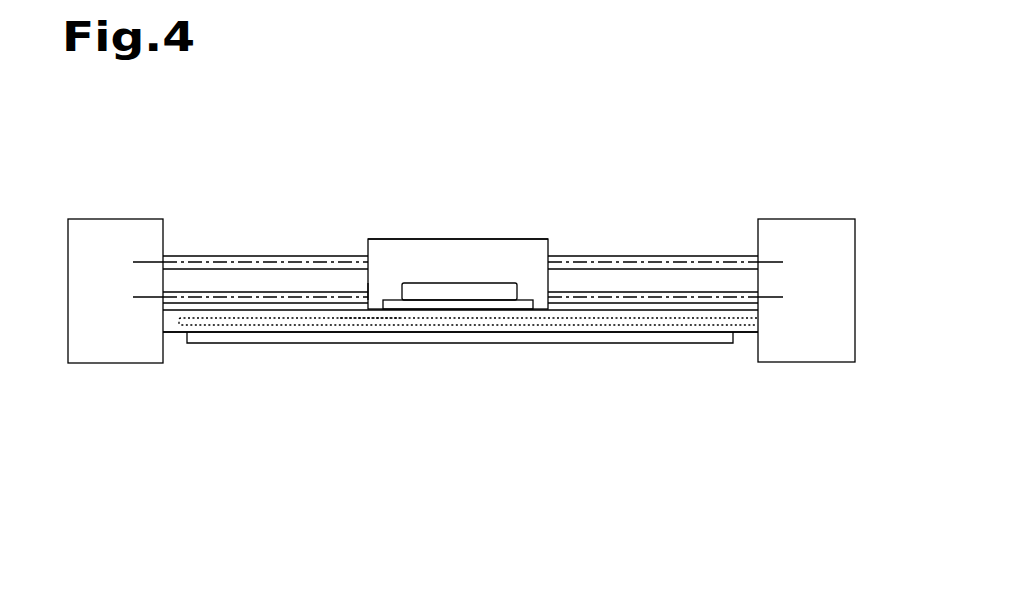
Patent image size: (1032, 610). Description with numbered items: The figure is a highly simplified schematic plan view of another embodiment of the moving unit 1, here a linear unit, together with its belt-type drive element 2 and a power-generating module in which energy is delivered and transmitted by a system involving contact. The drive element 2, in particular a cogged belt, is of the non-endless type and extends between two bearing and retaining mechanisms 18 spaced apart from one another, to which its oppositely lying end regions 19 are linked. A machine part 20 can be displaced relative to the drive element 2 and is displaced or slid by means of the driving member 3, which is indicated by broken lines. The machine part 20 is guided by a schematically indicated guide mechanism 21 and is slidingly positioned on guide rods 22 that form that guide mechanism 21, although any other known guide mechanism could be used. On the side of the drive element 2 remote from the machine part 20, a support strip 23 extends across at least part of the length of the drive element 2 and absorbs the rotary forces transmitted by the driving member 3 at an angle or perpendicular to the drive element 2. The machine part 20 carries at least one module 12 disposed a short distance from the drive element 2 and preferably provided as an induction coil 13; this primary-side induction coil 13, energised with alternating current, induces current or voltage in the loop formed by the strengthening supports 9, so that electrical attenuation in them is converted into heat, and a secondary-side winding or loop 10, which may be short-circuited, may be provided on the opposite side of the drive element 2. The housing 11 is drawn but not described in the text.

The moving unit 1 is at (549, 405).
The drive element 2 is at (653, 333).
The driving member 3 is at (546, 299).
The strengthening supports 9 is at (333, 328).
The loop 10 is at (272, 330).
The carriage housing 11 is at (474, 203).
The module 12 is at (392, 290).
The induction coil 13 is at (421, 289).
The bearing and retaining mechanisms 18 is at (108, 356).
The end regions 19 is at (752, 284).
The machine part 20 is at (536, 244).
The guide mechanism 21 is at (221, 238).
The guide rods 22 is at (197, 292).
The support strip 23 is at (427, 340).